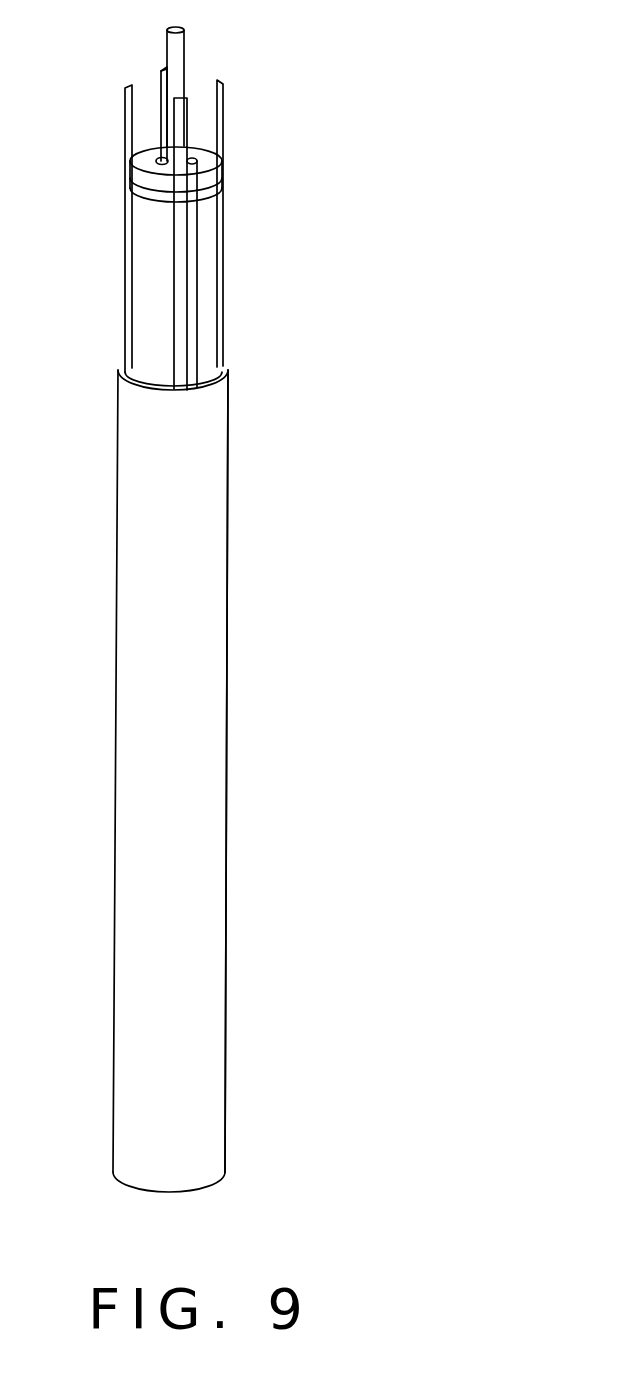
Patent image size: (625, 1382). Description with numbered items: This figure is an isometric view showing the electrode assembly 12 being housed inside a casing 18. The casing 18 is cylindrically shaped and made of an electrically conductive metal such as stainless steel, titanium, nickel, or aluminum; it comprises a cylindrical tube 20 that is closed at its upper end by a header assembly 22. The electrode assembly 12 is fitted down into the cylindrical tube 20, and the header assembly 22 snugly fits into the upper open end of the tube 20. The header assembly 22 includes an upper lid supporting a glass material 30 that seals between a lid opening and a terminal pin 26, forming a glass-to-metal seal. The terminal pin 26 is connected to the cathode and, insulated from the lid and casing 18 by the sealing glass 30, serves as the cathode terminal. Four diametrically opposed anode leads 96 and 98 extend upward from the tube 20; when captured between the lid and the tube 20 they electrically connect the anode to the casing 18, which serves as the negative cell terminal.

The electrode assembly 12 is at (257, 337).
The casing 18 is at (269, 584).
The cylindrical tube 20 is at (227, 717).
The header assembly 22 is at (203, 167).
The terminal pin 26 is at (176, 68).
The glass material 30 is at (158, 161).
The anode lead 96 is at (223, 117).
The anode lead 98 is at (160, 77).